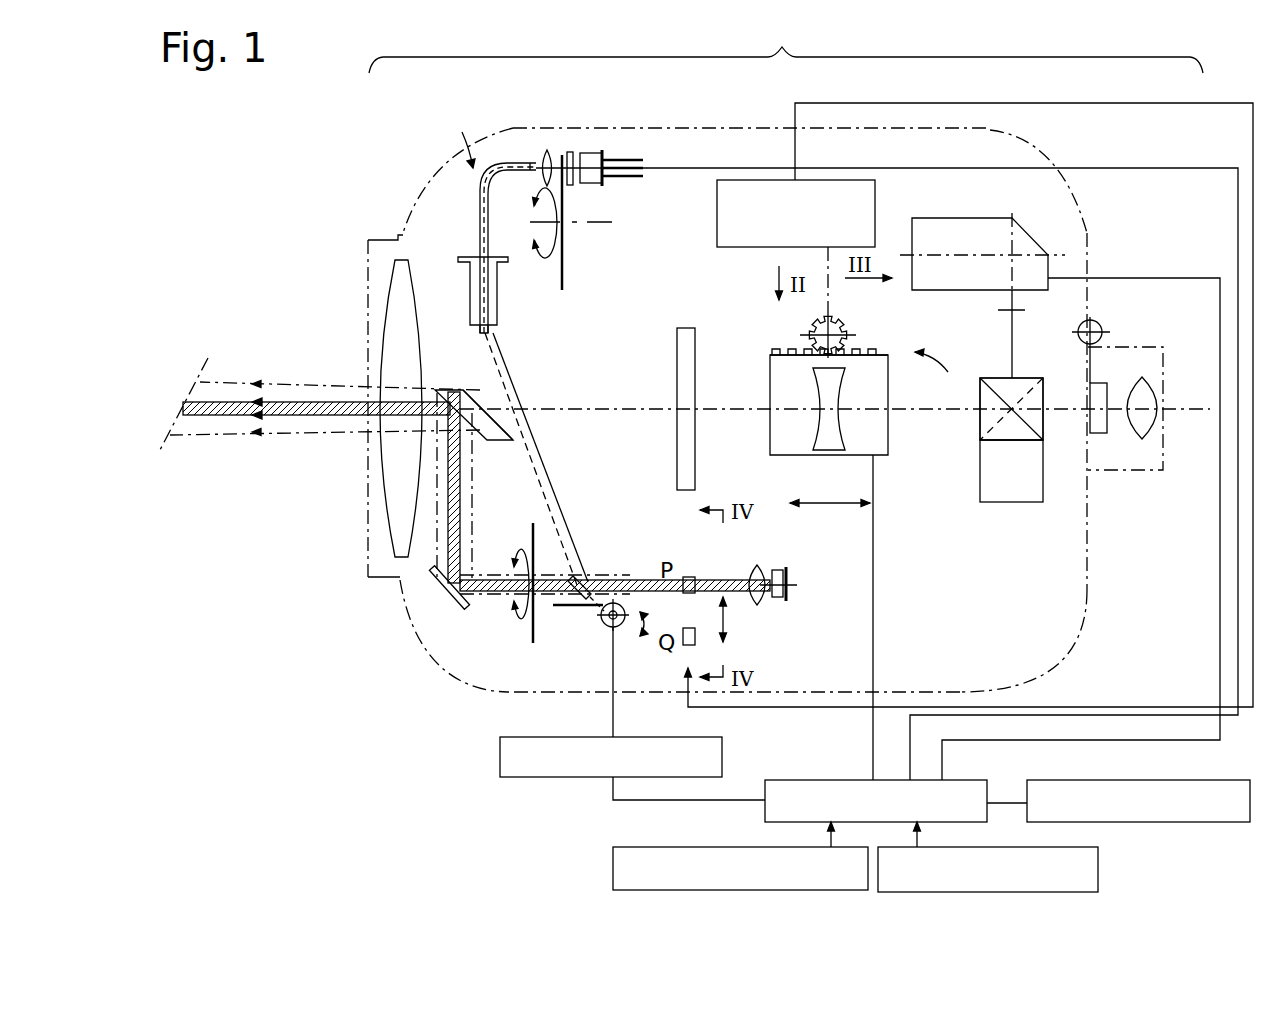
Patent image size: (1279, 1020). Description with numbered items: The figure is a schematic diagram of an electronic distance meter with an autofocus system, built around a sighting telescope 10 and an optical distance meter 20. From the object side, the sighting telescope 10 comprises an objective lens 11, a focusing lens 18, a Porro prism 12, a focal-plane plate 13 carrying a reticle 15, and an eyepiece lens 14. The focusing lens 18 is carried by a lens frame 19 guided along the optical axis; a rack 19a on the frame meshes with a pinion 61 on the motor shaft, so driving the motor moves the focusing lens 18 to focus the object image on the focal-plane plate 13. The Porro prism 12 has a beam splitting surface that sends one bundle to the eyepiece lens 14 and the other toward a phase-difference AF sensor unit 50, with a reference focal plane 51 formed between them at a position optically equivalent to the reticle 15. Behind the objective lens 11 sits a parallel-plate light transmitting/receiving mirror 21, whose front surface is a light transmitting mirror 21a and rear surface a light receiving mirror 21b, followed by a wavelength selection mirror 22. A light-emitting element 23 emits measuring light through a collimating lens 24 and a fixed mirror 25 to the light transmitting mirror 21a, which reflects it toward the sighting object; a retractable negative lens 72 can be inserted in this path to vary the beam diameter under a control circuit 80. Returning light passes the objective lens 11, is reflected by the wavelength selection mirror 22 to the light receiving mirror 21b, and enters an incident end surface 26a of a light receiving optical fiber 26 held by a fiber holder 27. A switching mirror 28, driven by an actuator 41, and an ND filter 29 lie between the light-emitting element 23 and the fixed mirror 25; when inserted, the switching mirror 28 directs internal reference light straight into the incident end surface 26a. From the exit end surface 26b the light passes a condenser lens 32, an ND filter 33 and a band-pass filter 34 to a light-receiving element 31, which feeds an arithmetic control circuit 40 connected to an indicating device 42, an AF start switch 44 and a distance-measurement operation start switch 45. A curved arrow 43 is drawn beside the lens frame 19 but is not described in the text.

The sighting telescope 10 is at (786, 48).
The objective lens 11 is at (403, 233).
The Porro prism 12 is at (1033, 378).
The focal-plane plate 13 is at (1100, 390).
The eyepiece lens 14 is at (1137, 378).
The reticle 15 is at (1097, 322).
The focusing lens 18 is at (820, 390).
The lens frame 19 is at (880, 390).
The rack 19a is at (884, 355).
The optical distance meter 20 is at (460, 137).
The light transmitting/receiving mirror 21 is at (510, 441).
The light transmitting mirror 21a is at (470, 441).
The light receiving mirror 21b is at (515, 441).
The wavelength selection mirror 22 is at (681, 328).
The light-emitting element 23 is at (778, 600).
The collimating lens 24 is at (757, 566).
The fixed mirror 25 is at (452, 604).
The light receiving optical fiber 26 is at (479, 197).
The incident end surface 26a is at (480, 332).
The exit end surface 26b is at (536, 163).
The fiber holder 27 is at (497, 265).
The switching mirror 28 is at (588, 572).
The ND filter 29 is at (537, 642).
The light-receiving element 31 is at (590, 153).
The condenser lens 32 is at (547, 150).
The ND filter 33 is at (563, 290).
The band-pass filter 34 is at (570, 186).
The arithmetic control circuit 40 is at (792, 782).
The actuator 41 is at (518, 745).
The indicating device 42 is at (1235, 789).
The rotation direction 43 is at (940, 372).
The AF start switch 44 is at (1098, 878).
The distance-measurement operation start switch 45 is at (652, 850).
The AF sensor unit 50 is at (978, 228).
The reference focal plane 51 is at (998, 312).
The pinion 61 is at (840, 321).
The negative lens 72 is at (689, 577).
The control circuit 80 is at (737, 247).